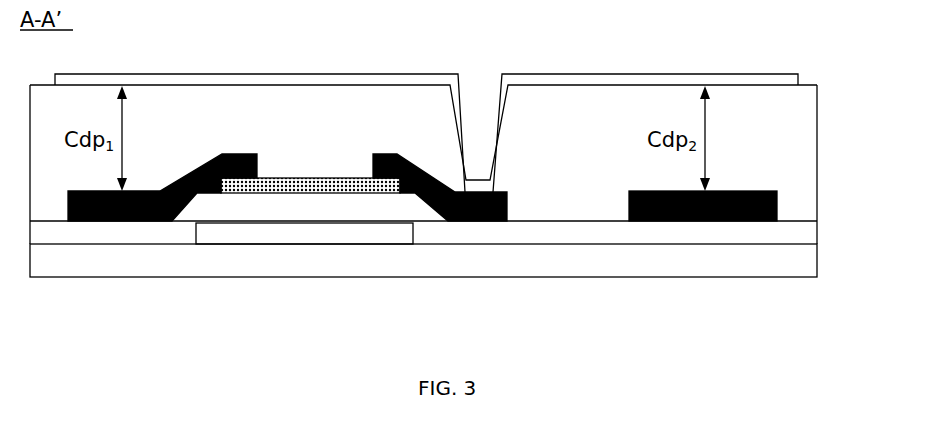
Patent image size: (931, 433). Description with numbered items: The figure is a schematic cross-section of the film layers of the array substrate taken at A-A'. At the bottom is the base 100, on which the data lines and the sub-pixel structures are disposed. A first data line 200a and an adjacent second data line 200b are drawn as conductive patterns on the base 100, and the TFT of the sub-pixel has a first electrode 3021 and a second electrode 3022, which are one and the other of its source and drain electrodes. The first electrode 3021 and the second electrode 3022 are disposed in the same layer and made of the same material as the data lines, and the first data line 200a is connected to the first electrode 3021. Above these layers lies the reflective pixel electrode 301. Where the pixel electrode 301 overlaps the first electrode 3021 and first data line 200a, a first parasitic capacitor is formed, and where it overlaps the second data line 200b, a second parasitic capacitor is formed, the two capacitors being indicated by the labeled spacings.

The base 100 is at (800, 263).
The reflective pixel electrode 301 is at (797, 81).
The first data line 200a is at (128, 222).
The second data line 200b is at (692, 222).
The first electrode 3021 is at (233, 195).
The second electrode 3022 is at (383, 194).